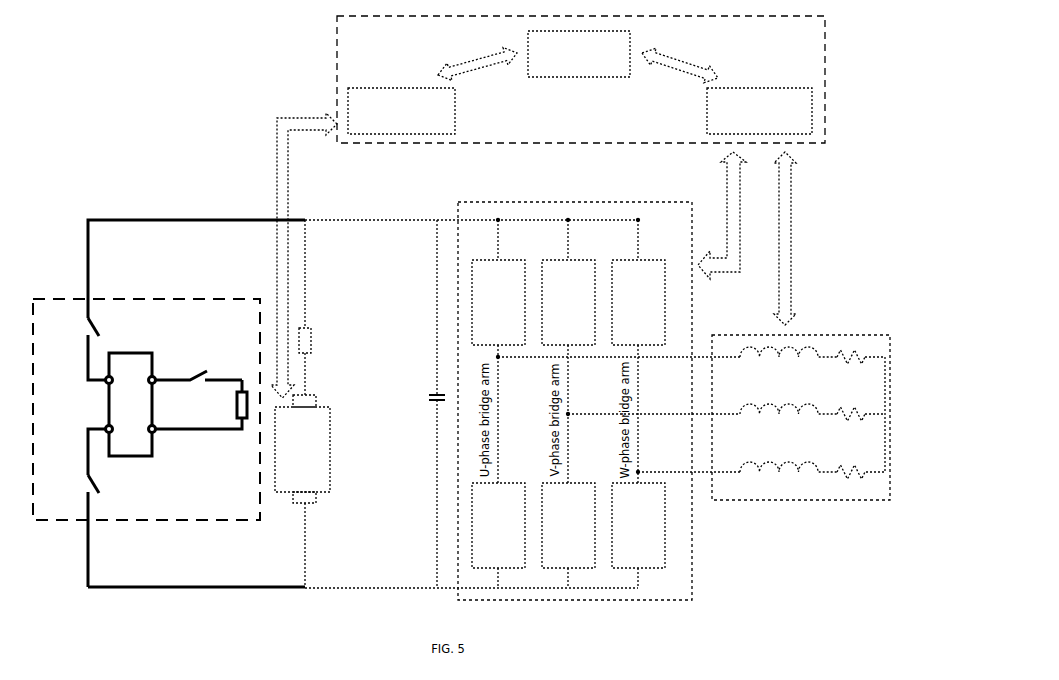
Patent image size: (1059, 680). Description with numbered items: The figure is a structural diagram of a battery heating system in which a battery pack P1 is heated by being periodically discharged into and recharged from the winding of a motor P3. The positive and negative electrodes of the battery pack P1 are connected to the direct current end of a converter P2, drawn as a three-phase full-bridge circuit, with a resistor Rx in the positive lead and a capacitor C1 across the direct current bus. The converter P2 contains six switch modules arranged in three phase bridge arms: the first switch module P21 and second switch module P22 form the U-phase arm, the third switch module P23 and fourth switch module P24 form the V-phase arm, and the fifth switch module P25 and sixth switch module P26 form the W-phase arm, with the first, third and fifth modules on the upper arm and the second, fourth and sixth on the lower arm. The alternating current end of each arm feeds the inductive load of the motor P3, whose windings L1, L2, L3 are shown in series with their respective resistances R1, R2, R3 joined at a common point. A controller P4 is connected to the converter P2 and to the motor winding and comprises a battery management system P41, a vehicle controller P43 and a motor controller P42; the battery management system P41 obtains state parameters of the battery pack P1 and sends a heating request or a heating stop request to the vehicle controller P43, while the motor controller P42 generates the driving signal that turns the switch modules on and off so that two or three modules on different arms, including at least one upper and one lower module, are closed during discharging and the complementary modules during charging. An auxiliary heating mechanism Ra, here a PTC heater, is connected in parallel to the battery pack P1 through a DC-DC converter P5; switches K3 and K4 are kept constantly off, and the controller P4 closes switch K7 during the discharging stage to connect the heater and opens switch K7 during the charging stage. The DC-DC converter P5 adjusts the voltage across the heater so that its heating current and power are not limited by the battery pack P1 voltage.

The battery pack P1 is at (302, 449).
The converter P2 is at (692, 243).
The motor P3 is at (836, 335).
The controller P4 is at (442, 16).
The DC-DC converter P5 is at (133, 353).
The first switch module P21 is at (498, 302).
The second switch module P22 is at (498, 525).
The third switch module P23 is at (568, 302).
The fourth switch module P24 is at (568, 525).
The fifth switch module P25 is at (638, 302).
The sixth switch module P26 is at (638, 525).
The battery management system P41 is at (401, 111).
The motor controller P42 is at (759, 111).
The vehicle controller P43 is at (579, 54).
The switch K3 is at (77, 327).
The switch K4 is at (81, 482).
The switch K7 is at (199, 366).
The auxiliary heating mechanism Ra is at (201, 404).
The resistor Rx is at (315, 340).
The capacitor C1 is at (430, 404).
The winding L1 is at (788, 363).
The winding L2 is at (788, 420).
The winding L3 is at (788, 478).
The U-phase winding resistance R1 is at (851, 364).
The V-phase winding resistance R2 is at (851, 421).
The W-phase winding resistance R3 is at (851, 479).